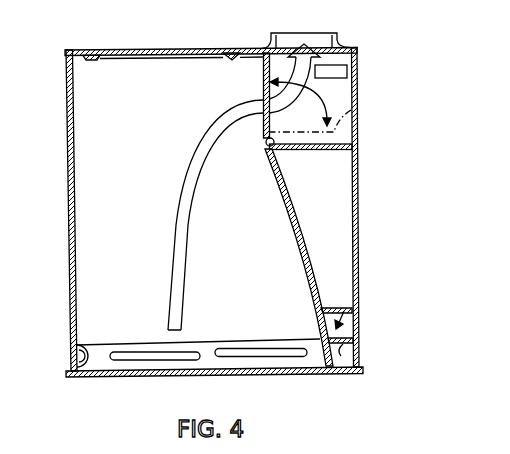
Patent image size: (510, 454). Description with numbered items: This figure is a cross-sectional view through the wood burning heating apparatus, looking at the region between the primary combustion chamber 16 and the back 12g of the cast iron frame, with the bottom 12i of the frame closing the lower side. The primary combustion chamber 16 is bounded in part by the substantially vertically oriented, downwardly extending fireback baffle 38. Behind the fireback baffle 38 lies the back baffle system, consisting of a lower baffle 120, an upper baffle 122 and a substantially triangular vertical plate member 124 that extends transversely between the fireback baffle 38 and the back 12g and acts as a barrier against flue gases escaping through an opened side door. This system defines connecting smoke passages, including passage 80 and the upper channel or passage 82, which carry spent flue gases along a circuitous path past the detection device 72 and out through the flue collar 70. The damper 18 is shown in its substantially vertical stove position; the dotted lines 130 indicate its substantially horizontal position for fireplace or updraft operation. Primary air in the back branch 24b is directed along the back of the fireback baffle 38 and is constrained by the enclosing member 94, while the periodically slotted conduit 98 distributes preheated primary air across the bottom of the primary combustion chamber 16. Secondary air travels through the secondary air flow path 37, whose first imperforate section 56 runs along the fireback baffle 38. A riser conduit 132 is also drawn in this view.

The primary combustion chamber 16 is at (158, 108).
The damper 18 is at (263, 72).
The flue collar 70 is at (338, 36).
The detection device 72 is at (347, 70).
The upper channel 82 is at (335, 88).
The dotted lines 130 is at (357, 107).
The upper baffle 122 is at (335, 150).
The passage 80 is at (333, 181).
The back 12g is at (356, 211).
The lower baffle 120 is at (338, 306).
The secondary air flow path 37 is at (334, 309).
The first imperforate section 56 is at (340, 328).
The back branch 24b is at (344, 338).
The enclosing member 94 is at (345, 351).
The bottom 12i is at (248, 374).
The slotted conduit 98 is at (148, 342).
The riser tube 132 is at (182, 181).
The fireback baffle 38 is at (297, 218).
The vertical plate member 124 is at (313, 173).